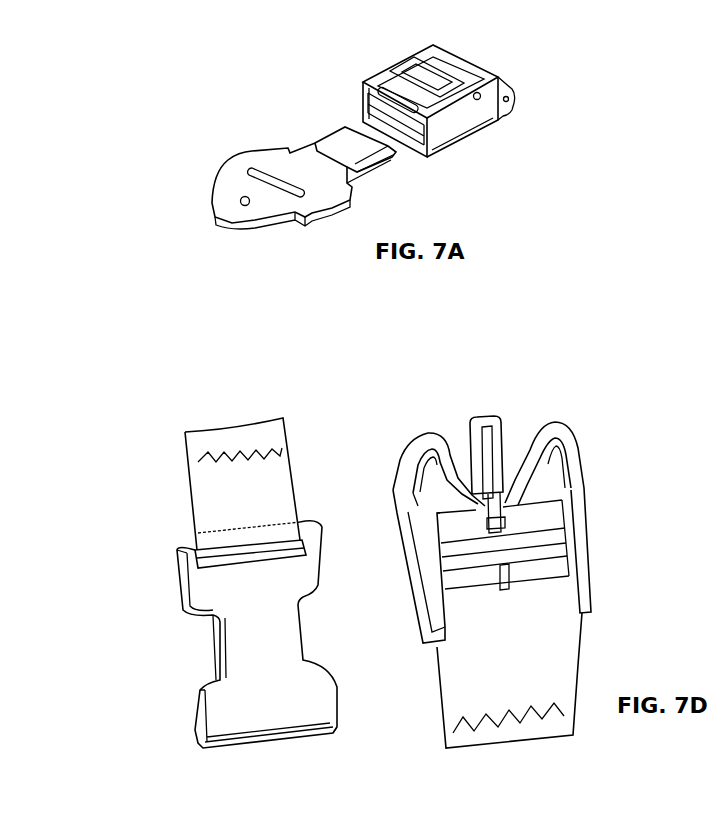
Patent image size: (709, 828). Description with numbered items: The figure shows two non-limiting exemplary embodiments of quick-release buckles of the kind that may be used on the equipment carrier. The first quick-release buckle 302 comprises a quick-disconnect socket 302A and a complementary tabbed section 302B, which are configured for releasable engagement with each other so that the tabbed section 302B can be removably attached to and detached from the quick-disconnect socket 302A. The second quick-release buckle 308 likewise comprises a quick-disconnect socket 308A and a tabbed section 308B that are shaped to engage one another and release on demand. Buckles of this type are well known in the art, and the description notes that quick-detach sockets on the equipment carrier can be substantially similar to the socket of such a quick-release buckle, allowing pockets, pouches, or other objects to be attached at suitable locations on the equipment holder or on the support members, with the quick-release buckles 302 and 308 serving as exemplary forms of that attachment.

In FIG. 7A, the quick-release buckle 302 is at (441, 187).
In FIG. 7A, the quick-disconnect socket 302A is at (476, 144).
In FIG. 7A, the tabbed section 302B is at (308, 129).
In FIG. 7D, the quick-release buckle 308 is at (353, 418).
In FIG. 7D, the quick-disconnect socket 308A is at (330, 629).
In FIG. 7D, the tabbed section 308B is at (600, 463).